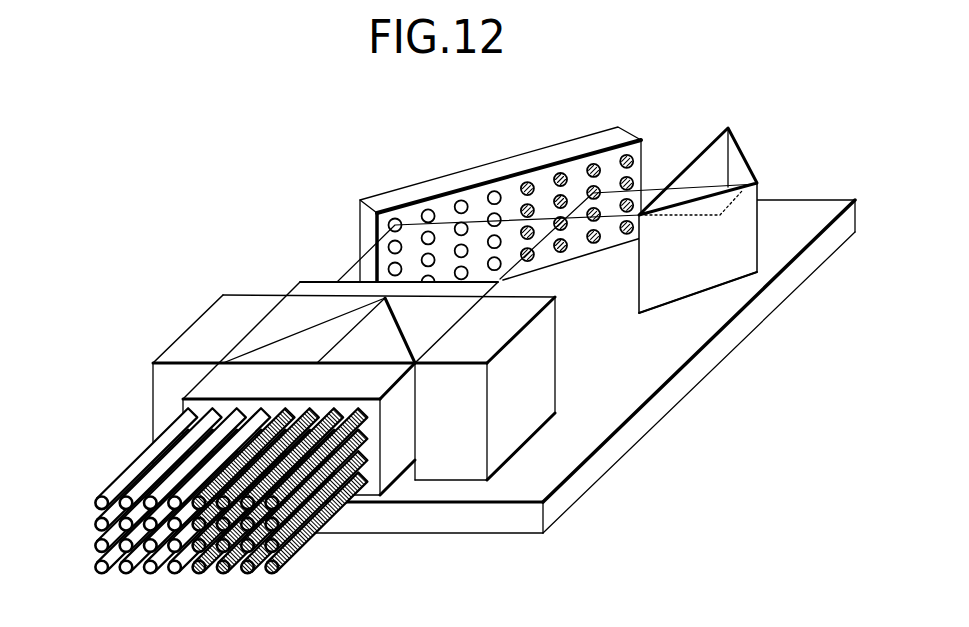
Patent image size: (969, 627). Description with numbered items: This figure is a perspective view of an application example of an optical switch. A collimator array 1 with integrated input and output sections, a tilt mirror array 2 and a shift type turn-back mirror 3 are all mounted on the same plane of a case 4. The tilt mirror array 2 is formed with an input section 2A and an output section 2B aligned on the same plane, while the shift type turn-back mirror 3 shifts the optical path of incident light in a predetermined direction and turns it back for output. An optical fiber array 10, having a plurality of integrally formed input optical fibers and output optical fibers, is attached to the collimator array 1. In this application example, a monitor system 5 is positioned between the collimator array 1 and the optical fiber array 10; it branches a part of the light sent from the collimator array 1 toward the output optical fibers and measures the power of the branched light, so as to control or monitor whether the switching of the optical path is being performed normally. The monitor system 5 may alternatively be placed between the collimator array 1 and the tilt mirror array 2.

The collimator array 1 is at (354, 348).
The tilt mirror array 2 is at (464, 185).
The input section 2A is at (365, 175).
The output section 2B is at (507, 141).
The shift type turn-back mirror 3 is at (742, 153).
The case 4 is at (682, 383).
The monitor system 5 is at (302, 345).
The optical fiber array 10 is at (397, 460).